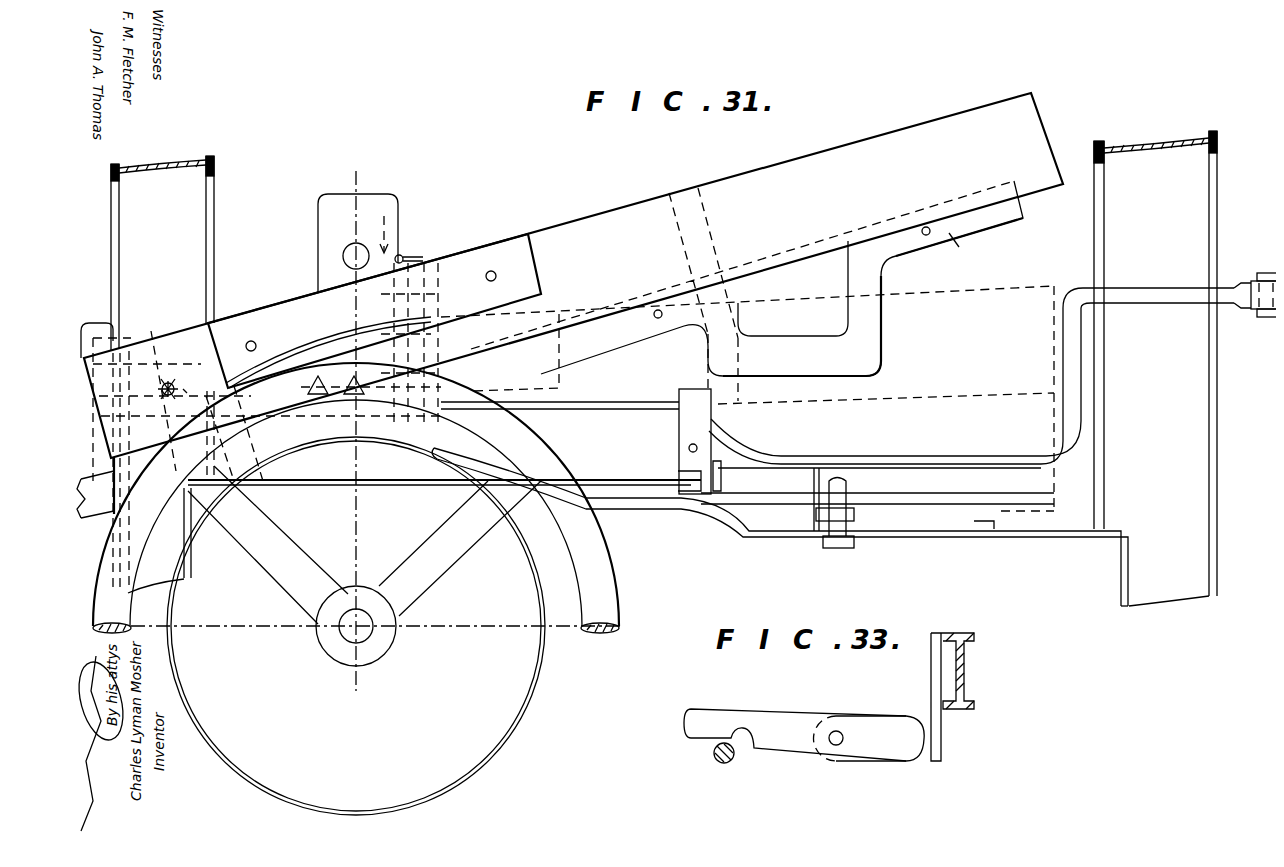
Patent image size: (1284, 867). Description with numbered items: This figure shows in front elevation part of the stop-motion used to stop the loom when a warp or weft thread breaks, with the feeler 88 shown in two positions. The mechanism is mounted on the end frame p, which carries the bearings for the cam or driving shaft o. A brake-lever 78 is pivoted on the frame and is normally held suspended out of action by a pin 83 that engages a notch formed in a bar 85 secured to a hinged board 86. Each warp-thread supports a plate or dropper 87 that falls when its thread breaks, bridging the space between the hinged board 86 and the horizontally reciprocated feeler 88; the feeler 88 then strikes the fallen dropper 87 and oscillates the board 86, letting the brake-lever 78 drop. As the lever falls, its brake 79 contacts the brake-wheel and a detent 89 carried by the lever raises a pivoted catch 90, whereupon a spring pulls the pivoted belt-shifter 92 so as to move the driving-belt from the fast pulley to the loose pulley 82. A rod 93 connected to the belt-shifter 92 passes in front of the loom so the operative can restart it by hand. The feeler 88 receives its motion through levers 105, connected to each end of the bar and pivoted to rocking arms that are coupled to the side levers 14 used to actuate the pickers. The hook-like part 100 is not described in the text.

In FIG. 31, the end frame p is at (214, 190).
In FIG. 31, the brake-lever 78 is at (573, 275).
In FIG. 31, the brake 79 is at (270, 318).
In FIG. 31, the loose pulley 82 is at (410, 457).
In FIG. 31, the pin 83 is at (435, 333).
In FIG. 31, the bar 85 is at (440, 293).
In FIG. 31, the hinged board 86 is at (410, 256).
In FIG. 31, the dropper 87 is at (400, 230).
In FIG. 31, the feeler 88 is at (355, 380).
In FIG. 31, the detent 89 is at (730, 291).
In FIG. 31, the pivoted catch 90 is at (866, 468).
In FIG. 33, the pivoted catch 90 is at (848, 730).
In FIG. 31, the belt-shifter 92 is at (537, 497).
In FIG. 33, the belt-shifter 92 is at (714, 758).
In FIG. 31, the rod 93 is at (1264, 306).
In FIG. 31, the lever 14 is at (577, 348).
In FIG. 31, the hook 100 is at (101, 326).
In FIG. 31, the lever 105 is at (150, 370).
In FIG. 31, the cam or driving shaft O is at (347, 623).